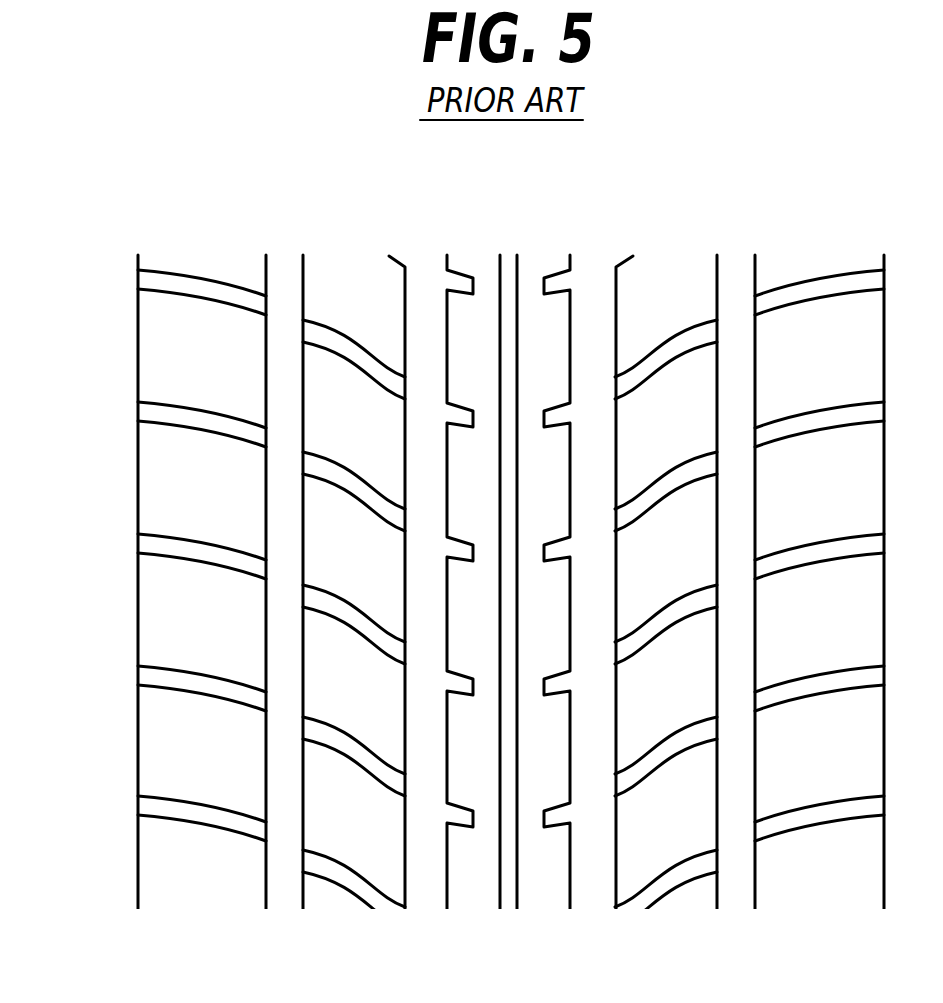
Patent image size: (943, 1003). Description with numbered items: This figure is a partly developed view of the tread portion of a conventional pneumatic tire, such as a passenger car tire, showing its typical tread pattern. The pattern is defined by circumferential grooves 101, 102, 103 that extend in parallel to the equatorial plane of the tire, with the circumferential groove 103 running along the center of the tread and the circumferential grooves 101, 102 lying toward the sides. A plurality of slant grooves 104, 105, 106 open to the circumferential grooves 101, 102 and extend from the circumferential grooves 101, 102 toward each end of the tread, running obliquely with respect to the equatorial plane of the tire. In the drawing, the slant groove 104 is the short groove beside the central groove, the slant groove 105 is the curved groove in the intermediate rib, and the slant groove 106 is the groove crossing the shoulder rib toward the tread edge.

The circumferential groove 101 is at (438, 323).
The circumferential groove 102 is at (283, 317).
The circumferential groove 103 is at (515, 297).
The slant groove 104 is at (477, 933).
The slant groove 105 is at (335, 740).
The slant groove 106 is at (160, 677).